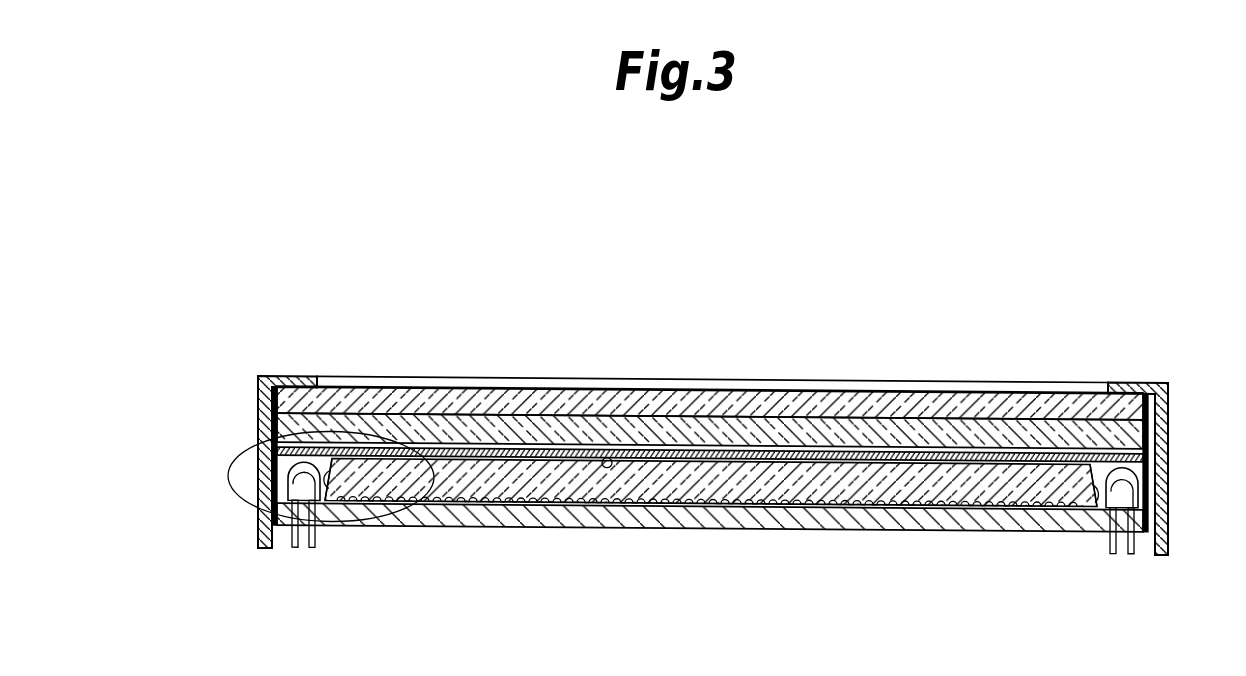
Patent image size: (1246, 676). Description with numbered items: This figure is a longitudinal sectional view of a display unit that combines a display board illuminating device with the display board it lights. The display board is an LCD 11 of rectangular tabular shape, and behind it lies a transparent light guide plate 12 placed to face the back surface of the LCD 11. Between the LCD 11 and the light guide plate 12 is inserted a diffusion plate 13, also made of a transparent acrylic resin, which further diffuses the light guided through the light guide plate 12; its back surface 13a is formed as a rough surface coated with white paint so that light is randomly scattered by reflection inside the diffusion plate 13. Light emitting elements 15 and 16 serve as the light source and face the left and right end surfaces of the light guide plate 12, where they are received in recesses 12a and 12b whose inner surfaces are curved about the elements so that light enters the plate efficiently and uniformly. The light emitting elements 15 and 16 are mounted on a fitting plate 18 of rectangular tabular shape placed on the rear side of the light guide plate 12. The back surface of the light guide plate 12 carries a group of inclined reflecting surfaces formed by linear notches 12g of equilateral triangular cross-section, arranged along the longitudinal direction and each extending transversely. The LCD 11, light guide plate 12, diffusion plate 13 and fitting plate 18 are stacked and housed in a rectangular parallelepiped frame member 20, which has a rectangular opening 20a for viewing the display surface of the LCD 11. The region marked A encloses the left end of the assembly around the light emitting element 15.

The LCD 11 is at (790, 423).
The light guide plate 12 is at (797, 500).
The recess 12a is at (349, 511).
The recess 12b is at (1088, 499).
The linear notches 12g is at (672, 498).
The diffusion plate 13 is at (565, 447).
The back surface of the diffusion plate 13a is at (607, 454).
The light emitting element 15 is at (300, 482).
The light emitting element 16 is at (1132, 468).
The fitting plate 18 is at (468, 508).
The frame member 20 is at (1160, 376).
The opening 20a is at (1108, 376).
The enlarged portion A is at (247, 450).